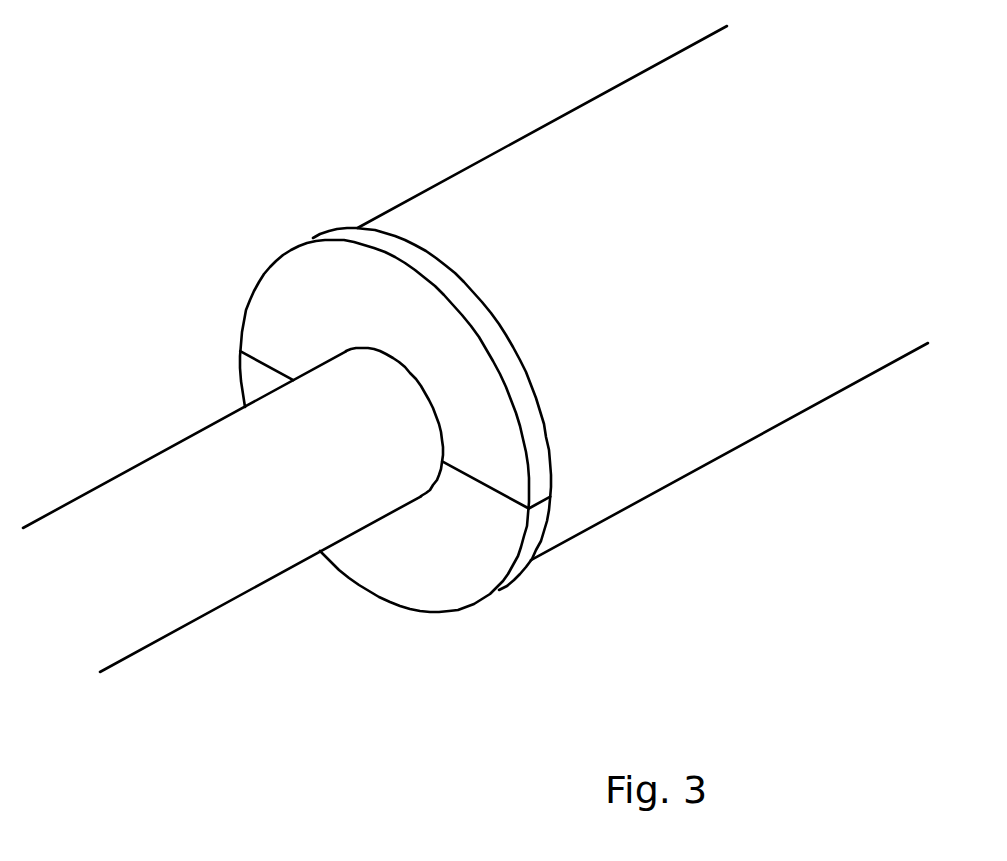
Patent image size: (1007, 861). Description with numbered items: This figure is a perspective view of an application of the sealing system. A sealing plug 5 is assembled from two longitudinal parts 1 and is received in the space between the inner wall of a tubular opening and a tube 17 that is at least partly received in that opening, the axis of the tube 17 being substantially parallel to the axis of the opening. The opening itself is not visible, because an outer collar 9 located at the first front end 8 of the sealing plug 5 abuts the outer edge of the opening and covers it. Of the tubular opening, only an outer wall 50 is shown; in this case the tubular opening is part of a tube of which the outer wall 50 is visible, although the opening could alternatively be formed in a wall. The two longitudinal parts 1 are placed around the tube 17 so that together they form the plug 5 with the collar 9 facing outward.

The longitudinal part 1 is at (435, 404).
The sealing plug 5 is at (502, 457).
The first front end 8 is at (408, 583).
The outer collar 9 is at (342, 237).
The tube 17 is at (157, 612).
The outer wall 50 is at (737, 423).